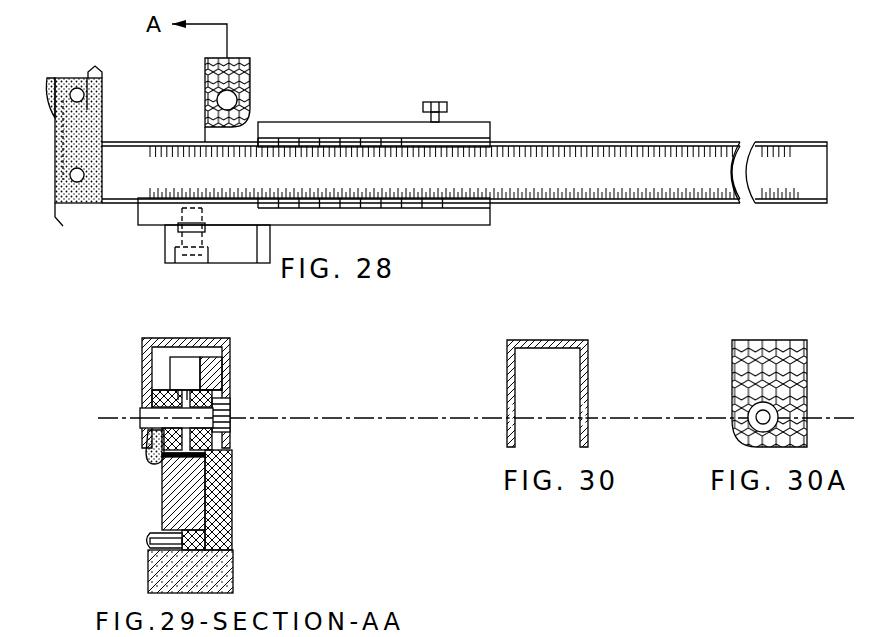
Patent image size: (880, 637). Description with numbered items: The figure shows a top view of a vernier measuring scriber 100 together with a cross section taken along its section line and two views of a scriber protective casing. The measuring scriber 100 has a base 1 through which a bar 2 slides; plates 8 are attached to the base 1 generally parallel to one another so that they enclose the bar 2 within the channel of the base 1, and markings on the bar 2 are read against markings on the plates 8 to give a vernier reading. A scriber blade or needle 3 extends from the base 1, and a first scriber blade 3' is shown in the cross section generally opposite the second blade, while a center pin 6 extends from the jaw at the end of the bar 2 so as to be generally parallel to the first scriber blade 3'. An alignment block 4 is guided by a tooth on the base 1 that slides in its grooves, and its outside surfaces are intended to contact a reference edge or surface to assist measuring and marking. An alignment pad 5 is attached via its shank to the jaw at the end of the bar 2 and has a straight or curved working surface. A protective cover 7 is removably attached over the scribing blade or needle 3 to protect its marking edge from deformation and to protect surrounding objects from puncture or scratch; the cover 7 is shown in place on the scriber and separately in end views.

In FIG. 28, the base 1 is at (340, 117).
In FIG. 29, the base 1 is at (238, 477).
In FIG. 28, the bar 2 is at (698, 167).
In FIG. 29, the bar 2 is at (187, 520).
In FIG. 28, the scriber blade or needle 3 is at (95, 184).
In FIG. 29, the first scriber blade 3' is at (219, 364).
In FIG. 28, the alignment block 4 is at (237, 264).
In FIG. 28, the alignment pad 5 is at (53, 78).
In FIG. 28, the center pin 6 is at (100, 68).
In FIG. 28, the protective cover 7 is at (255, 67).
In FIG. 29, the protective cover 7 is at (227, 382).
In FIG. 30, the protective cover 7 is at (587, 338).
In FIG. 30A, the protective cover 7 is at (747, 338).
In FIG. 28, the plates 8 is at (398, 215).
In FIG. 29, the plates 8 is at (150, 460).
In FIG. 28, the measuring scriber 100 is at (464, 134).